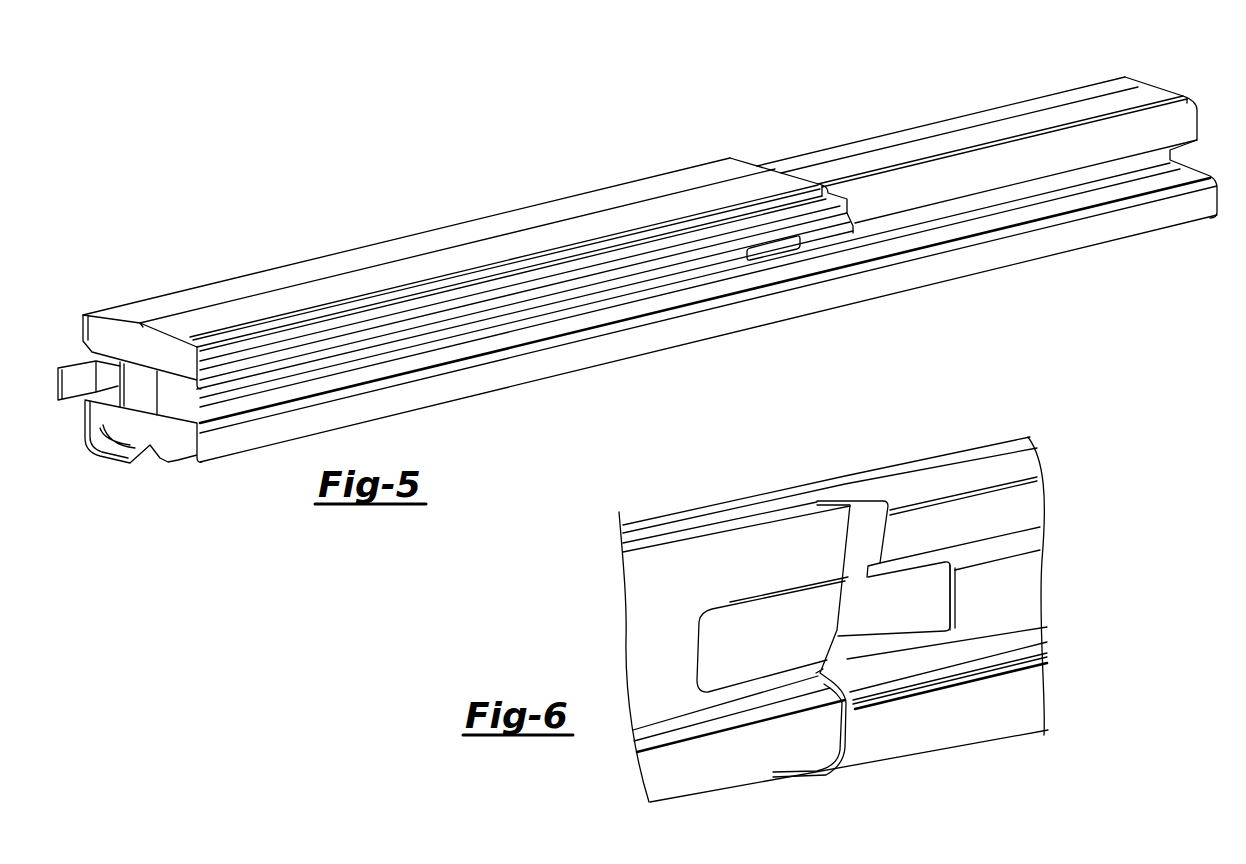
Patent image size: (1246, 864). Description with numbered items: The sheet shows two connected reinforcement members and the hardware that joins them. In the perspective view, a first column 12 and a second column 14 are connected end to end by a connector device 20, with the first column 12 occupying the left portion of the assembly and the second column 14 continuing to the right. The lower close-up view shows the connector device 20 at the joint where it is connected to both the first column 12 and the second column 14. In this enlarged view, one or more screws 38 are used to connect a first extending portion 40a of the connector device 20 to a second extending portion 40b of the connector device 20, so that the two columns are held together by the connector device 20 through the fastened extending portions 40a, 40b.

In FIG. 5, the first column 12 is at (350, 250).
In FIG. 6, the first column 12 is at (833, 619).
In FIG. 5, the second column 14 is at (908, 131).
In FIG. 6, the second column 14 is at (977, 586).
In FIG. 5, the connector device 20 is at (797, 245).
In FIG. 6, the connector device 20 is at (922, 633).
In FIG. 6, the screw 38 is at (810, 622).
In FIG. 6, the first extending portion 40a is at (784, 661).
In FIG. 6, the second extending portion 40b is at (910, 634).